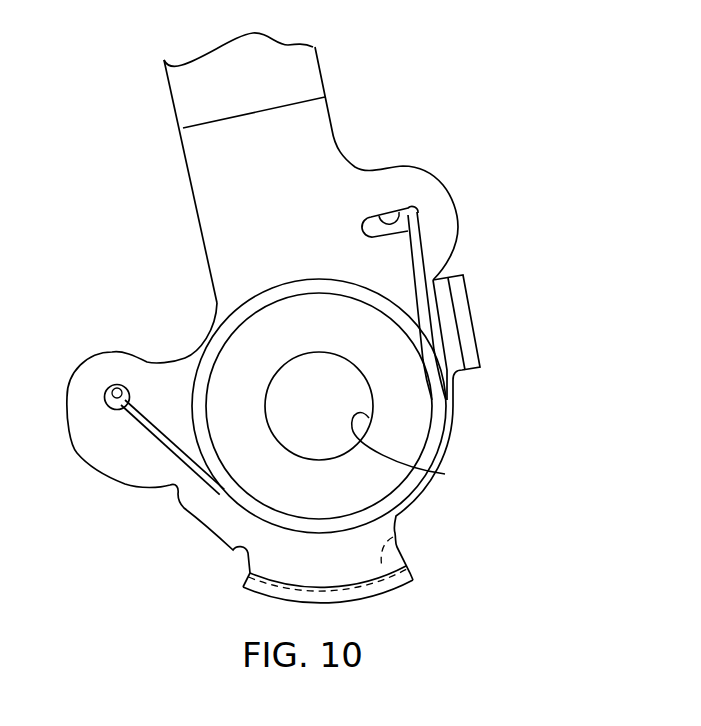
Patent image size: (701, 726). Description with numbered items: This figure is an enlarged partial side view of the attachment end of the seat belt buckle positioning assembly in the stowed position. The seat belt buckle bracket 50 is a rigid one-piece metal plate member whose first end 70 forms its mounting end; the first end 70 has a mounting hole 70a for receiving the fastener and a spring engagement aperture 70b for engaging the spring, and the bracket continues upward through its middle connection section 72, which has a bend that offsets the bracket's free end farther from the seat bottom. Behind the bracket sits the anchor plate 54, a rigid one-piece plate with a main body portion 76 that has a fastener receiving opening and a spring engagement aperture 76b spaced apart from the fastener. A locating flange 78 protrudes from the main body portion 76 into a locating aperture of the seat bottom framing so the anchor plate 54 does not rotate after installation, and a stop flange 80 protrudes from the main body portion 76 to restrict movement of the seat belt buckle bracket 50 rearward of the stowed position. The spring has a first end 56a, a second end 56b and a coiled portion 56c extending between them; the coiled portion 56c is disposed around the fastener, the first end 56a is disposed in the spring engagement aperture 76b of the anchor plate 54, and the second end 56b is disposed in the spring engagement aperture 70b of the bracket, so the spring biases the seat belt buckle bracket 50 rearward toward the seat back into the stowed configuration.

The seat belt buckle bracket 50 is at (307, 318).
The anchor plate 54 is at (116, 479).
The first end of the spring 56a is at (112, 410).
The second end of the spring 56b is at (418, 219).
The coiled portion of the spring 56c is at (270, 287).
The first end of the seat belt buckle bracket 70 is at (340, 383).
The mounting hole 70a is at (407, 395).
The spring engagement aperture of the seat belt buckle bracket 70b is at (375, 211).
The middle connection section 72 is at (172, 97).
The main body portion 76 is at (314, 561).
The spring engagement aperture of the anchor plate 76b is at (127, 387).
The locating flange 78 is at (405, 533).
The stop flange 80 is at (472, 315).